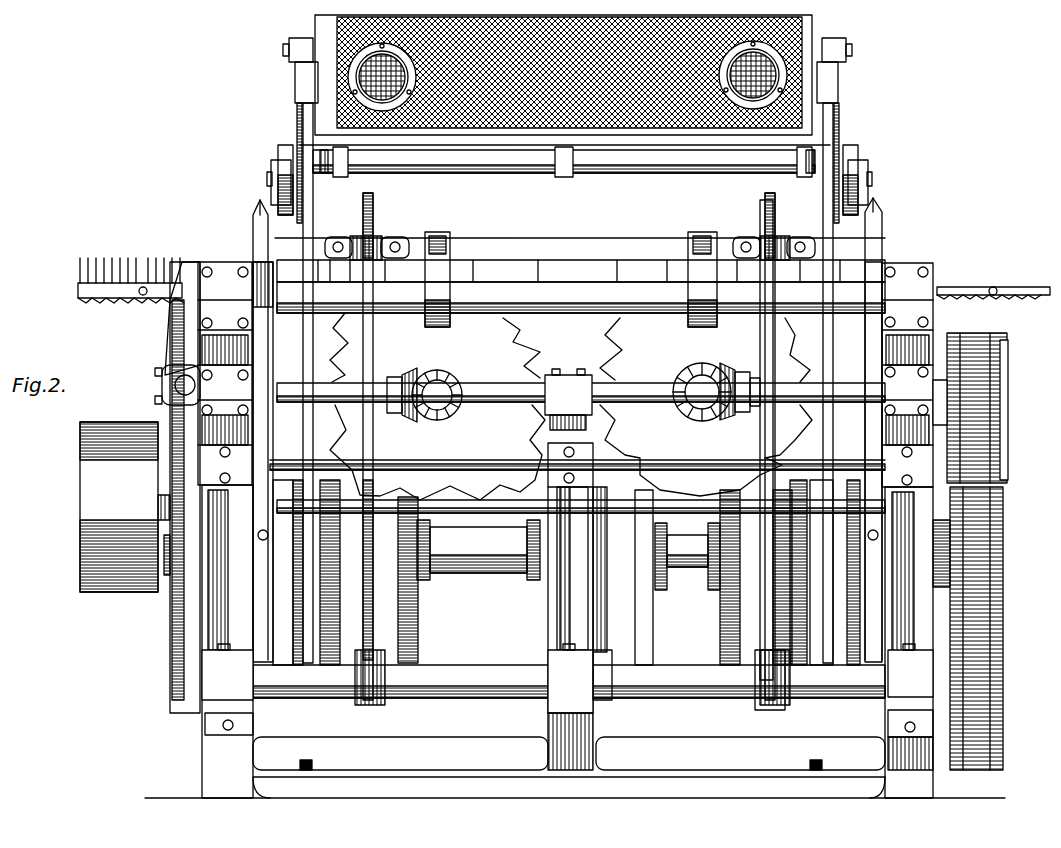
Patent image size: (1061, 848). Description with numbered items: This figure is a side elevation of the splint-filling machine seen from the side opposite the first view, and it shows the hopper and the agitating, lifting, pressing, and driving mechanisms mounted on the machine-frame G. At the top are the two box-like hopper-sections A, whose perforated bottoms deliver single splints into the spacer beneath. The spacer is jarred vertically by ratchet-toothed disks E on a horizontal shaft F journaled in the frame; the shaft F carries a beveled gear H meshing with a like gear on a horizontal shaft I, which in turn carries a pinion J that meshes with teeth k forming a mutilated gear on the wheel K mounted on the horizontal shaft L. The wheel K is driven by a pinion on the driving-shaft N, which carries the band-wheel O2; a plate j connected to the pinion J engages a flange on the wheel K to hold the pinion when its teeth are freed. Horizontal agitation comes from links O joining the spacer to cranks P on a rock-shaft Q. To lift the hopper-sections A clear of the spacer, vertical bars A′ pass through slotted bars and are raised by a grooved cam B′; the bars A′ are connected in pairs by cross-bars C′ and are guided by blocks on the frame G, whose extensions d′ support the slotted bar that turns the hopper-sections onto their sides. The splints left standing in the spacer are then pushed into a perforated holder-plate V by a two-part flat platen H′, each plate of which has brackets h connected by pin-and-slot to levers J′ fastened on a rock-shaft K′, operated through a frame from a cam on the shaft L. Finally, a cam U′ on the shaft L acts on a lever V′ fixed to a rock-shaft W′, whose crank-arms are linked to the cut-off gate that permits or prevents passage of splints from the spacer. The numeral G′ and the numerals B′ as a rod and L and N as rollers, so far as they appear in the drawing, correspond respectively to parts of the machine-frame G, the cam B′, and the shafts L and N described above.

The hopper-section A is at (328, 78).
The vertical bar A′ is at (305, 204).
The cross-bar C′ is at (286, 150).
The horizontal shaft F is at (275, 170).
The extension of guide-block d′ is at (258, 205).
The bracket h is at (383, 240).
The two-part flat platen H′ is at (525, 260).
The rock-shaft Q is at (578, 285).
The crank P is at (480, 262).
The link O is at (437, 245).
The disk E is at (698, 362).
The horizontal shaft I is at (425, 365).
The beveled gear H is at (448, 385).
The lever J′ is at (372, 430).
The left frame G′ is at (232, 590).
The machine-frame G is at (910, 592).
The driving-shaft N is at (493, 520).
The horizontal shaft L is at (528, 570).
The cam B′ is at (352, 605).
The plate j is at (760, 612).
The rock-shaft K′ is at (470, 672).
The cam U′ is at (172, 622).
The band-wheel O2 is at (125, 507).
The perforated plate V is at (168, 283).
The lever V′ is at (185, 345).
The rock-shaft W′ is at (180, 387).
The pinion J is at (1008, 392).
The wheel K is at (996, 520).
The teeth k is at (1000, 480).